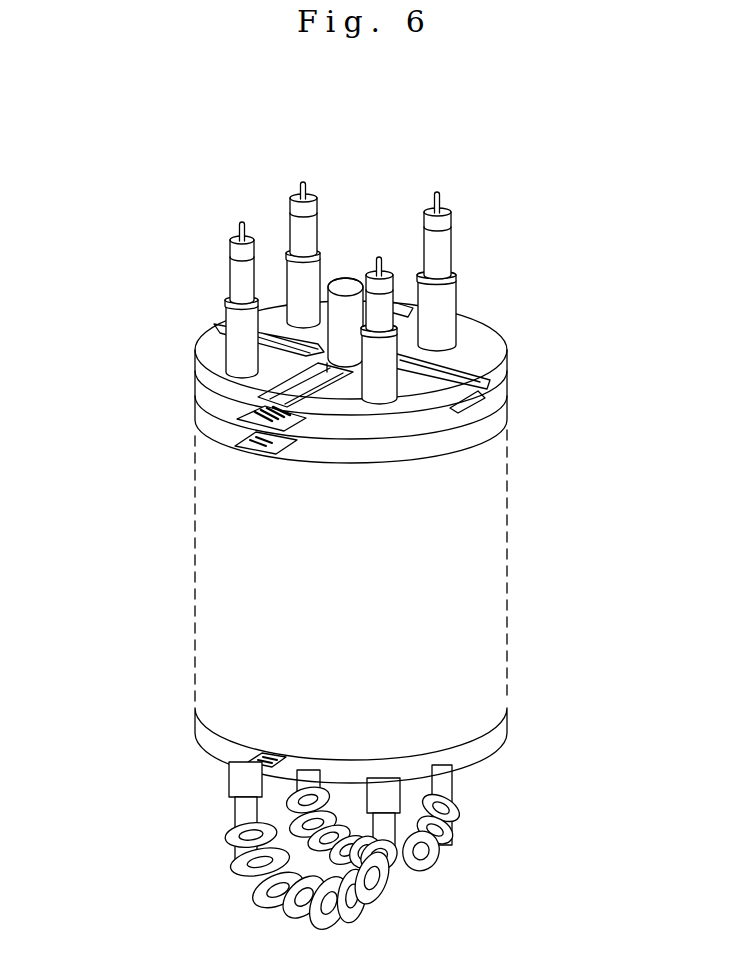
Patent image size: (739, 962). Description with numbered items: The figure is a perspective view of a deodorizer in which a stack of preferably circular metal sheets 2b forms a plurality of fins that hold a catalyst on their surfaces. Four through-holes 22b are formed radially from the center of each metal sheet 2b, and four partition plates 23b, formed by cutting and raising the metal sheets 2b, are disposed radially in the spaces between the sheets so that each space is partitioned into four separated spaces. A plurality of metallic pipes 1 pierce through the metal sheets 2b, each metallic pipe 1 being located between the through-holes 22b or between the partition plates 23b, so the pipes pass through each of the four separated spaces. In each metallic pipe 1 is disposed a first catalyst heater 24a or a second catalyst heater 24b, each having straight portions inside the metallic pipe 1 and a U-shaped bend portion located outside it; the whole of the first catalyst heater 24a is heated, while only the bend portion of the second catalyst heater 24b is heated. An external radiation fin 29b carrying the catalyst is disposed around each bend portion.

The metallic pipe 1 is at (445, 298).
The metal sheet 2b is at (480, 338).
The through-hole 22b is at (475, 373).
The partition plate 23b is at (470, 398).
The first catalyst heater 24a is at (311, 244).
The second catalyst heater 24b is at (238, 272).
The external radiation fin 29b is at (447, 845).